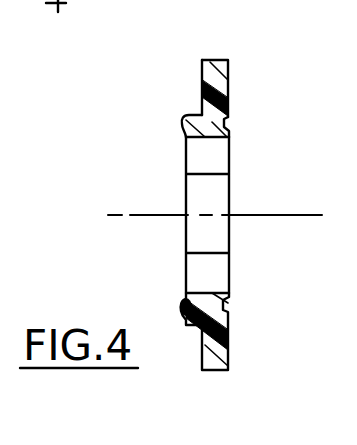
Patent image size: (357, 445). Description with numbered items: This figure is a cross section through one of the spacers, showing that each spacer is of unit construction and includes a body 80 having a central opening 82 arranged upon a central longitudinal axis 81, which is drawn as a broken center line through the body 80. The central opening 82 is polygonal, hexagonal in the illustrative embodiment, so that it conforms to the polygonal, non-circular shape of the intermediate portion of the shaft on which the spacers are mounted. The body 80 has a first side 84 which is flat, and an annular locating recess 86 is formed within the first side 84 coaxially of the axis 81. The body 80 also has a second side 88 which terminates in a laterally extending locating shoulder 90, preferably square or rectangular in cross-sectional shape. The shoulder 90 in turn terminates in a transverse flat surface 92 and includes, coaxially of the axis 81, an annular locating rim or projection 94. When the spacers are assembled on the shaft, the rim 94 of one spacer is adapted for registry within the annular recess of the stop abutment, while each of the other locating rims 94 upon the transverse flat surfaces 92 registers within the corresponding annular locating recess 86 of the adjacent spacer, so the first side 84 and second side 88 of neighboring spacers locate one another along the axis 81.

The body 80 is at (229, 89).
The central longitudinal axis 81 is at (152, 217).
The central opening 82 is at (208, 142).
The first side 84 is at (230, 62).
The annular locating recess 86 is at (229, 125).
The second side 88 is at (203, 79).
The locating shoulder 90 is at (198, 323).
The transverse flat surface 92 is at (188, 135).
The annular locating rim 94 is at (184, 120).